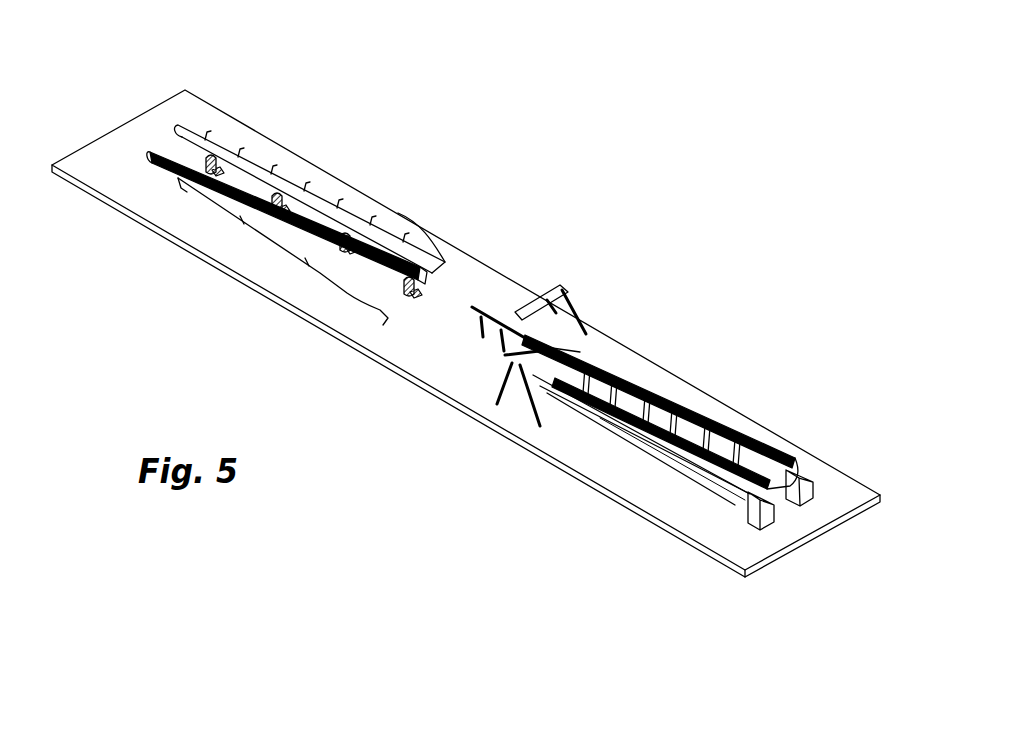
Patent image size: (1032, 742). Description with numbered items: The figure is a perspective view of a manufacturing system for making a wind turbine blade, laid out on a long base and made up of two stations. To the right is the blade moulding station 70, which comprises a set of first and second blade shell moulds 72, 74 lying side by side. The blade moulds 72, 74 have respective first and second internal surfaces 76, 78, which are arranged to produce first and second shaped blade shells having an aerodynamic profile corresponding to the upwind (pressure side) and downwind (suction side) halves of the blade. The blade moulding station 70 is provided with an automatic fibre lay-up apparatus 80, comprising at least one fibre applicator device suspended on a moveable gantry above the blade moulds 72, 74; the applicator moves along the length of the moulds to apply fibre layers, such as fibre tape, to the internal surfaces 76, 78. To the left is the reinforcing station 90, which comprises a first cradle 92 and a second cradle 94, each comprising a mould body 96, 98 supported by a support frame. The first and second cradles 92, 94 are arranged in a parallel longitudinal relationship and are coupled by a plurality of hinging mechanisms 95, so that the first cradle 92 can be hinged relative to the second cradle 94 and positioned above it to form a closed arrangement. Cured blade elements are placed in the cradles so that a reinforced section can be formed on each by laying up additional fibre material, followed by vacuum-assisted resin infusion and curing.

The blade moulding station 70 is at (743, 340).
The first blade shell mould 72 is at (760, 430).
The second blade shell mould 74 is at (655, 477).
The first internal surface 76 is at (768, 460).
The second internal surface 78 is at (707, 488).
The automatic fibre lay-up apparatus 80 is at (540, 359).
The reinforcing station 90 is at (406, 165).
The first cradle 92 is at (260, 244).
The second cradle 94 is at (267, 147).
The hinging mechanisms 95 is at (200, 167).
The mould body 96 is at (245, 212).
The mould body 98 is at (318, 200).